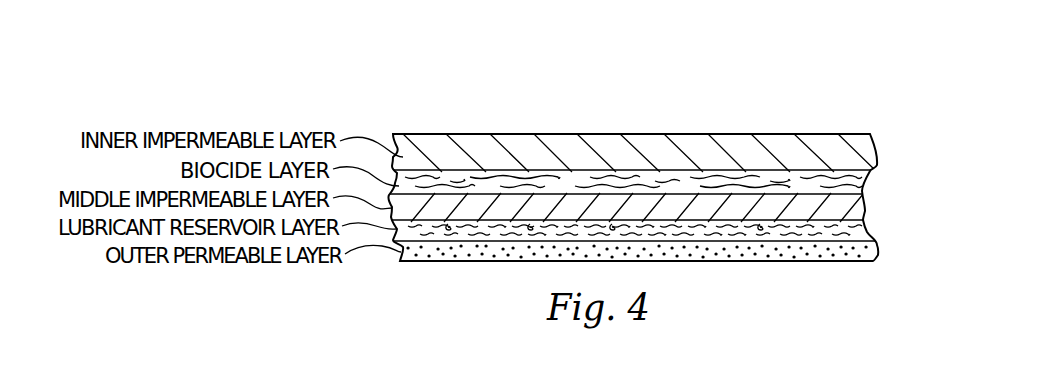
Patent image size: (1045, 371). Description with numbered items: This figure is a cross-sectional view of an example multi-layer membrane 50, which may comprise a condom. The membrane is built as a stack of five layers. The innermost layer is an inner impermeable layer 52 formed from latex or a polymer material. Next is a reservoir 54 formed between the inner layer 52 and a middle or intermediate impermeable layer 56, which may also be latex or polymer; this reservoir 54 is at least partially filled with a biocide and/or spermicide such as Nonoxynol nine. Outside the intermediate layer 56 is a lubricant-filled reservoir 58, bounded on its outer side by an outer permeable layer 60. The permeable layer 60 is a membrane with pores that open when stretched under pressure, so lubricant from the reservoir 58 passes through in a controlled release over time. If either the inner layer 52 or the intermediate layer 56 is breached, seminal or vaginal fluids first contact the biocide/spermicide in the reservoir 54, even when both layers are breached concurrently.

The multi-layer membrane 50 is at (387, 82).
The inner impermeable layer 52 is at (874, 155).
The biocide reservoir 54 is at (865, 183).
The middle impermeable layer 56 is at (864, 207).
The lubricant reservoir 58 is at (866, 233).
The outer permeable layer 60 is at (877, 252).